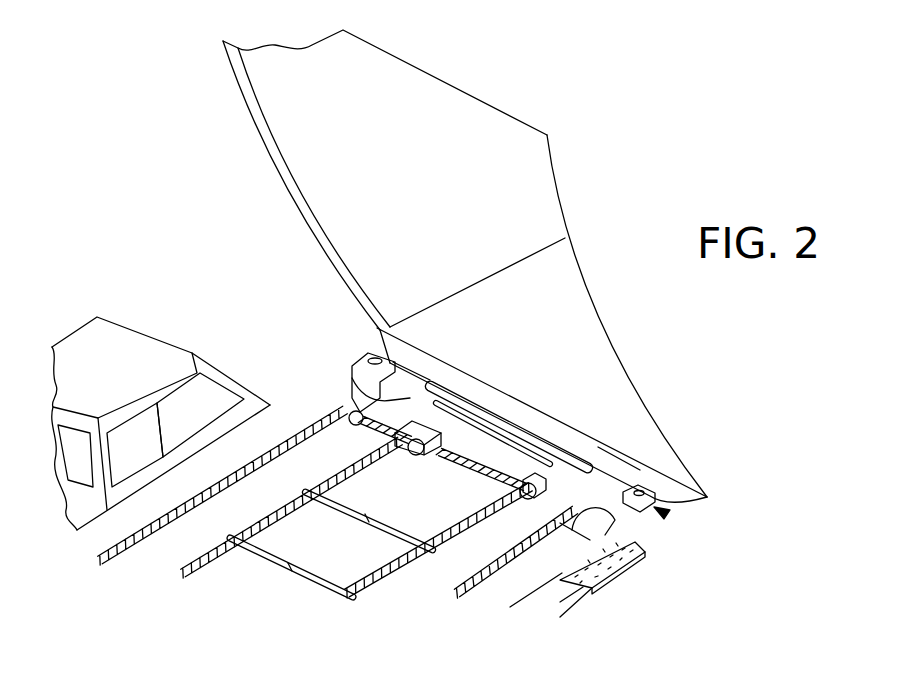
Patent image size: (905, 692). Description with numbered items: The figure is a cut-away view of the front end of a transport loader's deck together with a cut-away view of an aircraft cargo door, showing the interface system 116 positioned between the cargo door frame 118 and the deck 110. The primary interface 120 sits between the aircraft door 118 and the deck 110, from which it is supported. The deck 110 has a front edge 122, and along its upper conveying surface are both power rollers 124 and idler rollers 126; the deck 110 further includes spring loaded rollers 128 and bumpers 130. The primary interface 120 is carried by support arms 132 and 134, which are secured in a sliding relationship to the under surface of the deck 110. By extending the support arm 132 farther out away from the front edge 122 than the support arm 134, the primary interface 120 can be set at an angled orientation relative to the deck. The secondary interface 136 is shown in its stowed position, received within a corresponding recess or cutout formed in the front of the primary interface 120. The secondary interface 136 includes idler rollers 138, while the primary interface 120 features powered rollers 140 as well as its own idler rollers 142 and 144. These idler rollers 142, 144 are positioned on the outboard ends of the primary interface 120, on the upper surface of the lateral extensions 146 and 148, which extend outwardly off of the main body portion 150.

The deck 110 is at (597, 587).
The interface system 116 is at (670, 513).
The cargo door frame 118 is at (690, 480).
The primary interface 120 is at (615, 520).
The front edge 122 is at (630, 540).
The power rollers 124 is at (307, 577).
The idler rollers 126 is at (207, 572).
The spring loaded rollers 128 is at (349, 410).
The bumpers 130 is at (615, 567).
The support arm 132 is at (430, 455).
The support arm 134 is at (537, 497).
The secondary interface 136 is at (588, 465).
The idler rollers 138 is at (548, 458).
The powered rollers 140 is at (495, 430).
The idler roller 142 is at (708, 499).
The idler roller 144 is at (372, 352).
The lateral extension 146 is at (598, 448).
The lateral extension 148 is at (393, 362).
The main body portion 150 is at (410, 398).